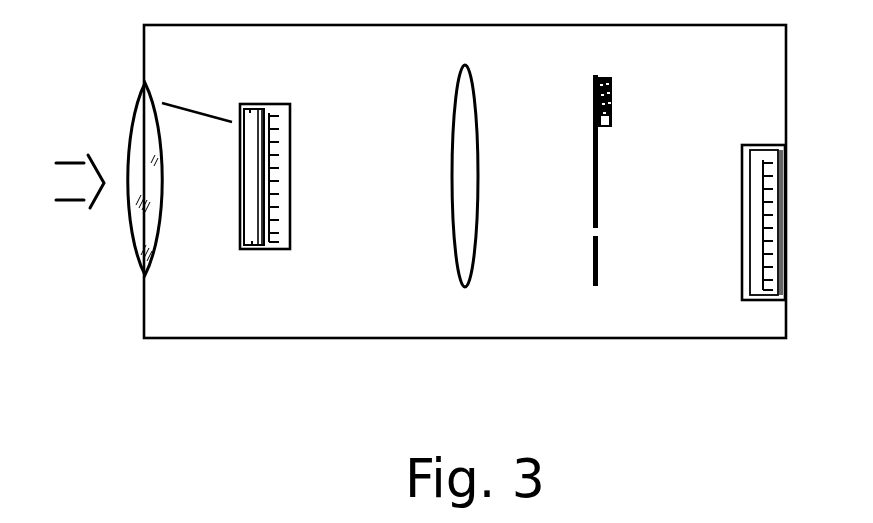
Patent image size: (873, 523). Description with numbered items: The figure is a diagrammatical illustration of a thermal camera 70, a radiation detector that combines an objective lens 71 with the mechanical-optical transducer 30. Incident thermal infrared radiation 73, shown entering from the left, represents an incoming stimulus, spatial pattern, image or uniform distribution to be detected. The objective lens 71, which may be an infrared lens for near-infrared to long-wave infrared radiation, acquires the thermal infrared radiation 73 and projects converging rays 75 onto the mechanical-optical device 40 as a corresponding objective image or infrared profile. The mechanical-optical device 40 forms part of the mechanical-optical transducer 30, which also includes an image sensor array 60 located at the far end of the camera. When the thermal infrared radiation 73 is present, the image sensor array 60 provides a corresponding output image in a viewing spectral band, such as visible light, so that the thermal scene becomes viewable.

The mechanical-optical transducer 30 is at (678, 74).
The mechanical-optical device 40 is at (266, 106).
The image sensor array 60 is at (750, 145).
The thermal camera 70 is at (329, 376).
The objective lens 71 is at (138, 105).
The thermal infrared radiation 73 is at (79, 204).
The converging rays 75 is at (218, 128).